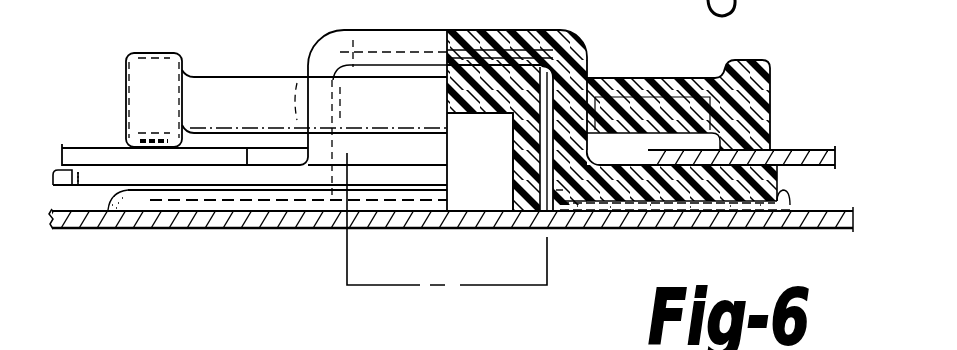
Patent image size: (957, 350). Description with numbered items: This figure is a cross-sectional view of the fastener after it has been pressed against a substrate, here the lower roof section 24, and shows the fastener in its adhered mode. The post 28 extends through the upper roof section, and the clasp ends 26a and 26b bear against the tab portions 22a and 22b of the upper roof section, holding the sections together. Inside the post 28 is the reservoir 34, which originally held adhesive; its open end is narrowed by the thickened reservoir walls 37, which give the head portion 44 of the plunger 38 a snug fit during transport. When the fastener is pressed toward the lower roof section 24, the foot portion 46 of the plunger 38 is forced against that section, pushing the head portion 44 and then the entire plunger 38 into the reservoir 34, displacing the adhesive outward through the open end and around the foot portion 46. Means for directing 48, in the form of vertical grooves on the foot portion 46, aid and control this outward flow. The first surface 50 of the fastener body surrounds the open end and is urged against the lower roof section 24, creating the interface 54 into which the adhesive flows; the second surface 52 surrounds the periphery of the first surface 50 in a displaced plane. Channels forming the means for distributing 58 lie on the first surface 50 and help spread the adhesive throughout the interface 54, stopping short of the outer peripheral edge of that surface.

The clasp end 26a is at (152, 60).
The tab portion 22a is at (108, 147).
The post 28 is at (472, 36).
The reservoir 34 is at (517, 40).
The head portion 44 is at (523, 83).
The means for directing 48 is at (548, 104).
The clasp end 26b is at (764, 62).
The tab portion 22b is at (792, 152).
The plunger 38 is at (502, 116).
The foot portion 46 is at (520, 163).
The thickened reservoir walls 37 is at (563, 194).
The interface 54 is at (212, 205).
The means for distributing 58 is at (295, 202).
The lower roof section 24 is at (815, 214).
The second surface 52 is at (95, 188).
The first surface 50 is at (148, 200).